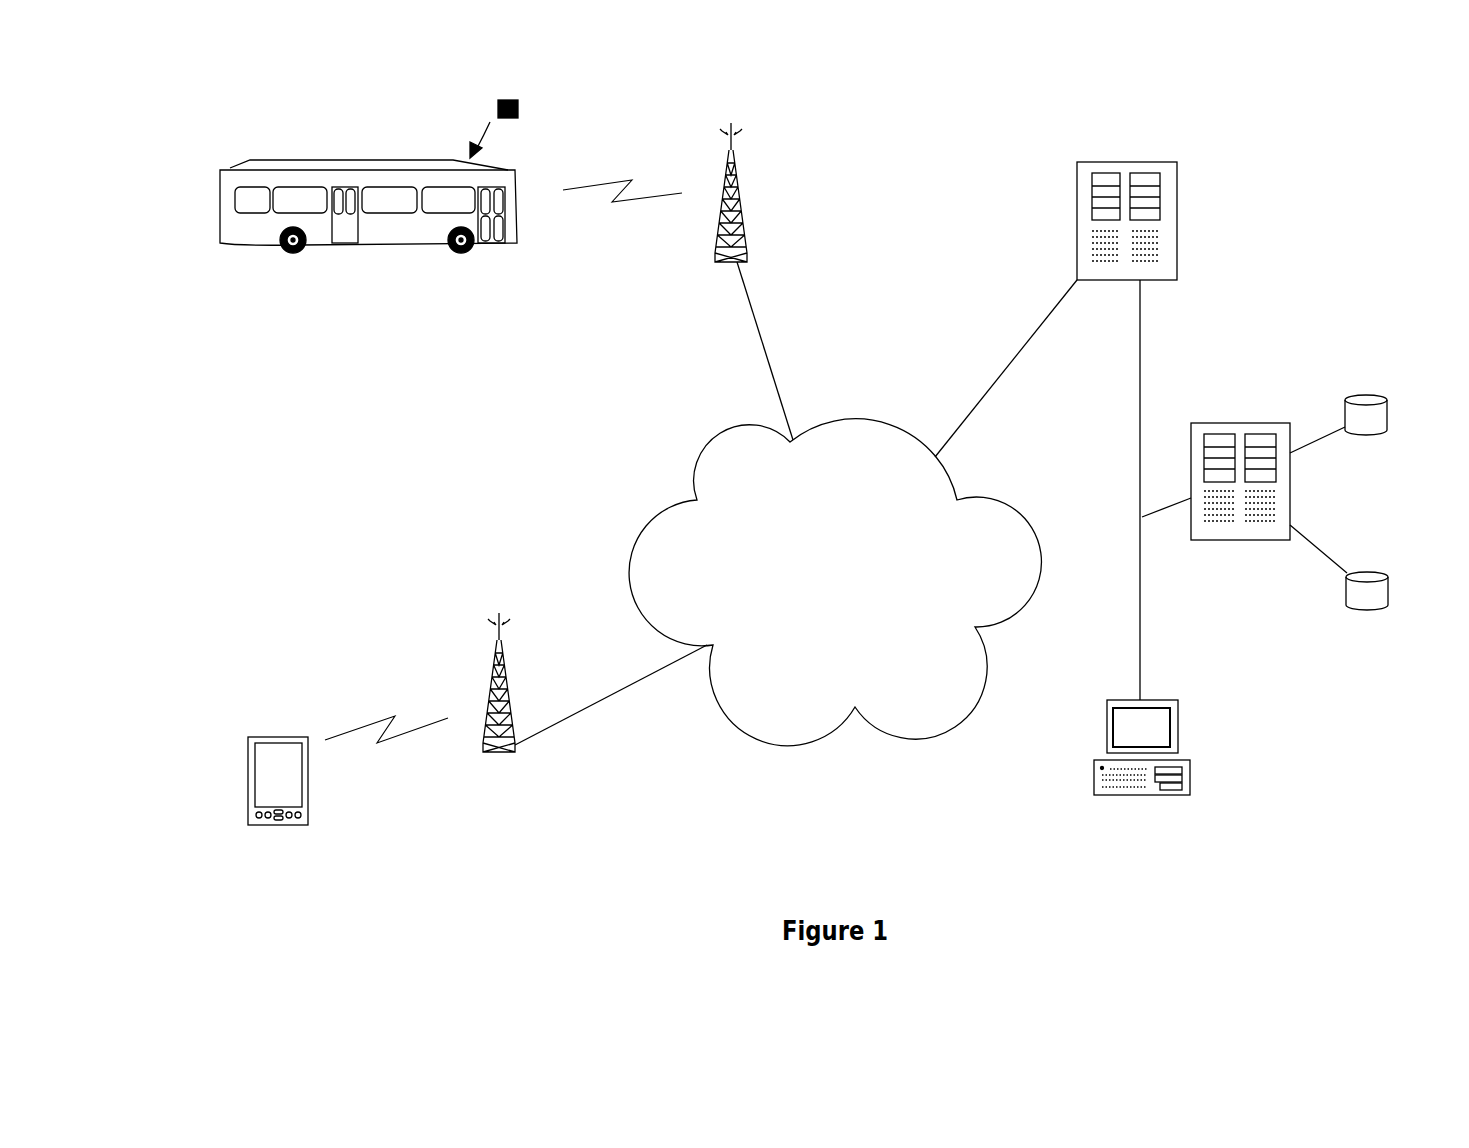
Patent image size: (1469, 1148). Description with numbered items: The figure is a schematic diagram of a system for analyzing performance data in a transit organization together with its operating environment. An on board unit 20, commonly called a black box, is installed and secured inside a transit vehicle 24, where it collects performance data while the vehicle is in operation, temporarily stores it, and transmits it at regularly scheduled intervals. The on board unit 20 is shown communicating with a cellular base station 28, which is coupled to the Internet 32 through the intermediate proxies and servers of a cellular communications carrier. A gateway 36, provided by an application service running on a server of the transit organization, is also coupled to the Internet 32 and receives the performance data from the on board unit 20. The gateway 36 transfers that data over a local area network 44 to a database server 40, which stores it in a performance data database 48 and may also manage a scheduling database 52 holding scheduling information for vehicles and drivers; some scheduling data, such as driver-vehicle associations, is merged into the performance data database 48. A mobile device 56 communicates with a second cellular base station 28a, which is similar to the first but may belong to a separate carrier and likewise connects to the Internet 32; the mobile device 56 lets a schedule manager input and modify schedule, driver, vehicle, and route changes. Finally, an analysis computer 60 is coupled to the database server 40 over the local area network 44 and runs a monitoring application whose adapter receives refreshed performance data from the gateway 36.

The on board unit 20 is at (517, 100).
The transit vehicle 24 is at (278, 160).
The cellular base station 28 is at (737, 172).
The cellular base station 28a is at (493, 665).
The Internet 32 is at (823, 604).
The gateway 36 is at (1160, 162).
The database server 40 is at (1258, 423).
The local area network 44 is at (1140, 492).
The performance data database 48 is at (1370, 393).
The scheduling database 52 is at (1368, 571).
The mobile device 56 is at (248, 763).
The analysis computer 60 is at (1188, 760).